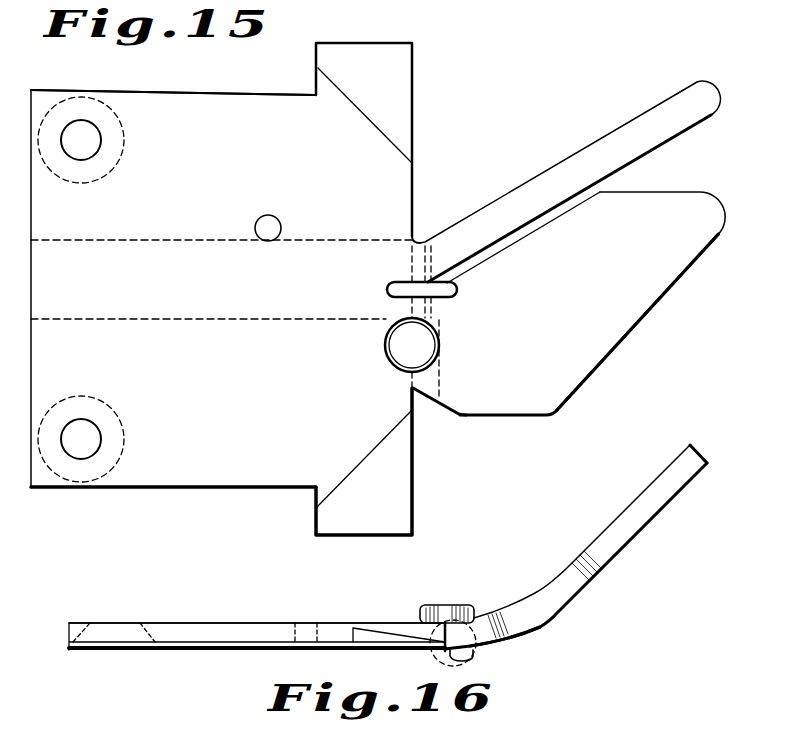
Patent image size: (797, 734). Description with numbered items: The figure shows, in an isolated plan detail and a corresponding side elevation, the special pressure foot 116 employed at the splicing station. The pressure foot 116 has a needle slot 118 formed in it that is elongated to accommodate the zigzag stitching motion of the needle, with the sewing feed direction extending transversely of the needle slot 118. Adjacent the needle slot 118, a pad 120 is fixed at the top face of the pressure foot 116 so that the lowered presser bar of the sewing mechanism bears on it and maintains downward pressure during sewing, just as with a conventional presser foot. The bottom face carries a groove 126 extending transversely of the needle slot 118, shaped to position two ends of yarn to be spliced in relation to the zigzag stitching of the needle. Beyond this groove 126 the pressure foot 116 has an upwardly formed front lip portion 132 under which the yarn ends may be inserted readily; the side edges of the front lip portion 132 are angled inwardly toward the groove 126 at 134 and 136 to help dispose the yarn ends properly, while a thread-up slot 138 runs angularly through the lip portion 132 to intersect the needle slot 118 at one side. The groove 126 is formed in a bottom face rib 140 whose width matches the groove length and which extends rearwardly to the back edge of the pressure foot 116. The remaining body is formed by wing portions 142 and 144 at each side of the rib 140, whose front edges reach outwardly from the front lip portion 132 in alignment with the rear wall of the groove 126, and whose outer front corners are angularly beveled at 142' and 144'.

In FIG. 15, the pressure foot 116 is at (643, 317).
In FIG. 15, the needle slot 118 is at (442, 298).
In FIG. 16, the needle slot 118 is at (512, 621).
In FIG. 15, the pad 120 is at (393, 347).
In FIG. 16, the pad 120 is at (460, 590).
In FIG. 15, the bottom face groove 126 is at (411, 264).
In FIG. 16, the bottom face groove 126 is at (450, 647).
In FIG. 15, the front lip portion 132 is at (585, 353).
In FIG. 16, the front lip portion 132 is at (638, 530).
In FIG. 15, the angled side edge 134 is at (470, 212).
In FIG. 15, the angled side edge 136 is at (445, 417).
In FIG. 15, the thread-up slot 138 is at (517, 243).
In FIG. 15, the bottom face rib 140 is at (233, 322).
In FIG. 16, the bottom face rib 140 is at (202, 650).
In FIG. 15, the wing portion 142 is at (173, 84).
In FIG. 15, the beveled outer front corner portion 142' is at (391, 139).
In FIG. 15, the wing portion 144 is at (173, 500).
In FIG. 16, the wing portion 144 is at (257, 610).
In FIG. 15, the beveled outer front corner portion 144' is at (389, 461).
In FIG. 16, the beveled outer front corner portion 144' is at (399, 615).